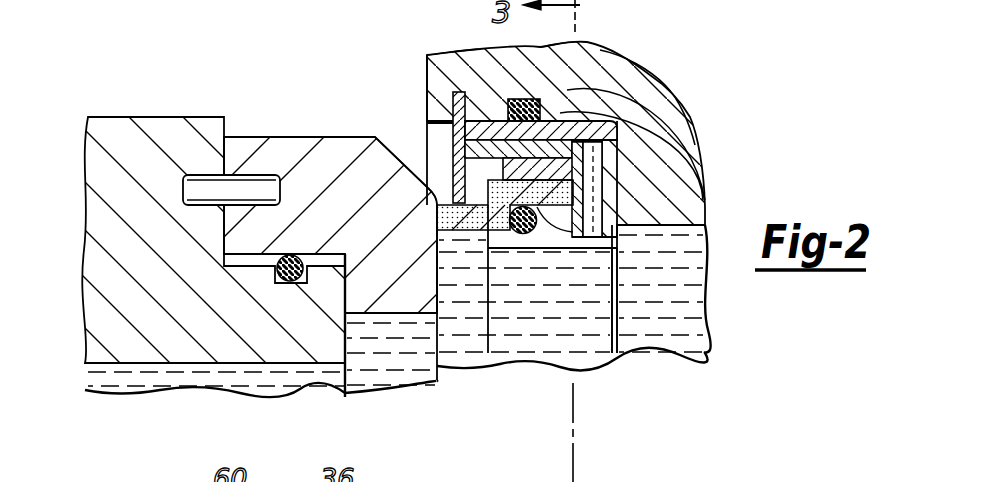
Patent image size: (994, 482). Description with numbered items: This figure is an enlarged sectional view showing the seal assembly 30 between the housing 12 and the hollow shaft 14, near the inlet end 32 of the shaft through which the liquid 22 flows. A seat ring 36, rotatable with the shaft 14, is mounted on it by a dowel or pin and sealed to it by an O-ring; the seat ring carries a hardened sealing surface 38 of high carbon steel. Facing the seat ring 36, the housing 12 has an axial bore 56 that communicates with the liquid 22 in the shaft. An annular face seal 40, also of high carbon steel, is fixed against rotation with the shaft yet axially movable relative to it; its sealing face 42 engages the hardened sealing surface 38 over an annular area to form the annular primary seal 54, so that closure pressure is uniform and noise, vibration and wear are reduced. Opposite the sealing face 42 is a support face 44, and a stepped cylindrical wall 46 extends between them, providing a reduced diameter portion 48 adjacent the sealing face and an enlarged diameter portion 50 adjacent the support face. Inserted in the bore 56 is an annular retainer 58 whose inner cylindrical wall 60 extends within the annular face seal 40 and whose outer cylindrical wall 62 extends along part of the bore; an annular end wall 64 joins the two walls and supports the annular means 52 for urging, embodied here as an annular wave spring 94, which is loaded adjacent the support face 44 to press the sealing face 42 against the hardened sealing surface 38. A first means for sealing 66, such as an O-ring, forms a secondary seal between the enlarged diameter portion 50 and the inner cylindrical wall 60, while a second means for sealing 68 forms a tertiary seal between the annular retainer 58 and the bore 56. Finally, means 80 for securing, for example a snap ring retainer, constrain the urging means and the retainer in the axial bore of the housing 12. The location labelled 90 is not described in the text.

The housing 12 is at (676, 92).
The shaft 14 is at (152, 125).
The liquid 22 is at (675, 327).
The seal assembly 30 is at (440, 159).
The inlet end 32 is at (292, 350).
The seat ring 36 is at (280, 153).
The hardened sealing surface 38 is at (431, 238).
The annular face seal 40 is at (483, 231).
The sealing face 42 is at (436, 290).
The support face 44 is at (580, 233).
The stepped cylindrical wall 46 is at (427, 133).
The reduced diameter portion 48 is at (430, 178).
The enlarged diameter portion 50 is at (572, 223).
The annular means for urging 52 is at (598, 182).
The annular primary seal 54 is at (437, 210).
The axial bore 56 is at (650, 64).
The annular retainer 58 is at (688, 116).
The inner cylindrical wall 60 is at (566, 225).
The outer cylindrical wall 62 is at (485, 97).
The annular end wall 64 is at (704, 220).
The first means for sealing 66 is at (540, 207).
The second means for sealing 68 is at (492, 121).
The means for securing 80 is at (427, 57).
The housing surface 90 is at (598, 44).
The annular wave spring 94 is at (612, 150).